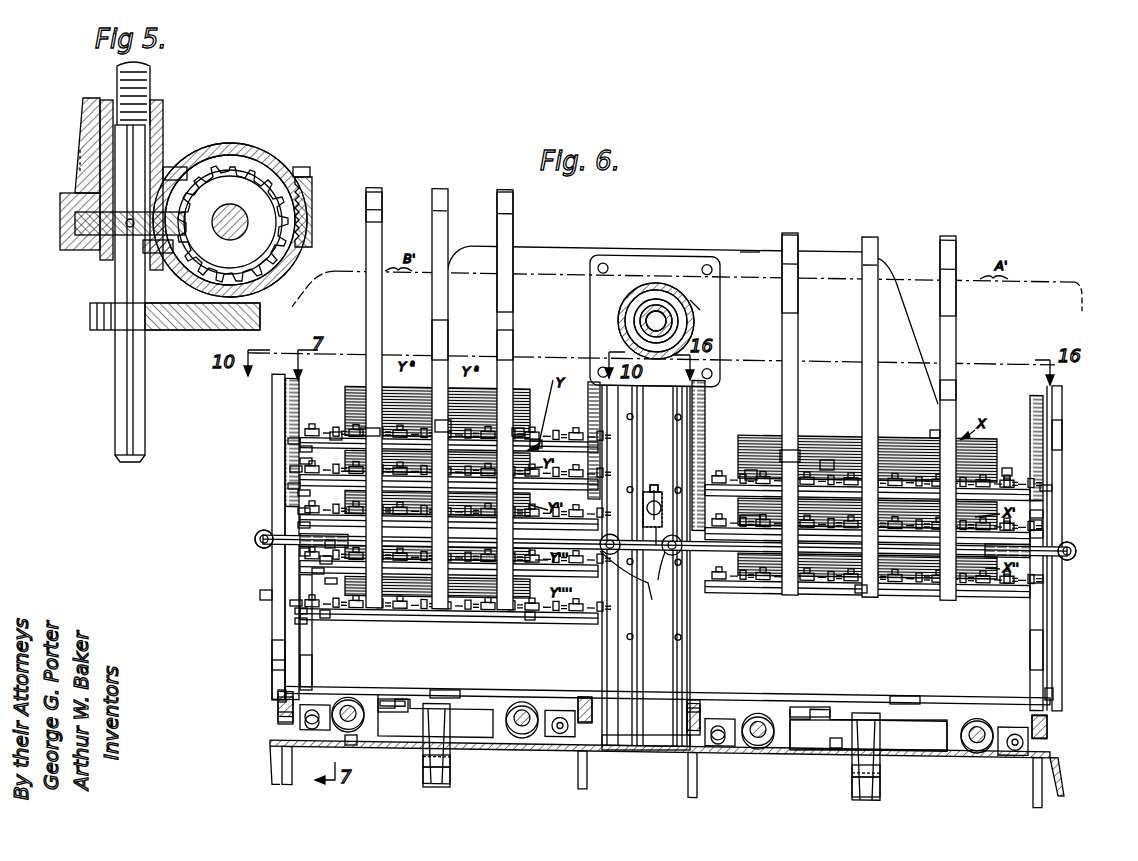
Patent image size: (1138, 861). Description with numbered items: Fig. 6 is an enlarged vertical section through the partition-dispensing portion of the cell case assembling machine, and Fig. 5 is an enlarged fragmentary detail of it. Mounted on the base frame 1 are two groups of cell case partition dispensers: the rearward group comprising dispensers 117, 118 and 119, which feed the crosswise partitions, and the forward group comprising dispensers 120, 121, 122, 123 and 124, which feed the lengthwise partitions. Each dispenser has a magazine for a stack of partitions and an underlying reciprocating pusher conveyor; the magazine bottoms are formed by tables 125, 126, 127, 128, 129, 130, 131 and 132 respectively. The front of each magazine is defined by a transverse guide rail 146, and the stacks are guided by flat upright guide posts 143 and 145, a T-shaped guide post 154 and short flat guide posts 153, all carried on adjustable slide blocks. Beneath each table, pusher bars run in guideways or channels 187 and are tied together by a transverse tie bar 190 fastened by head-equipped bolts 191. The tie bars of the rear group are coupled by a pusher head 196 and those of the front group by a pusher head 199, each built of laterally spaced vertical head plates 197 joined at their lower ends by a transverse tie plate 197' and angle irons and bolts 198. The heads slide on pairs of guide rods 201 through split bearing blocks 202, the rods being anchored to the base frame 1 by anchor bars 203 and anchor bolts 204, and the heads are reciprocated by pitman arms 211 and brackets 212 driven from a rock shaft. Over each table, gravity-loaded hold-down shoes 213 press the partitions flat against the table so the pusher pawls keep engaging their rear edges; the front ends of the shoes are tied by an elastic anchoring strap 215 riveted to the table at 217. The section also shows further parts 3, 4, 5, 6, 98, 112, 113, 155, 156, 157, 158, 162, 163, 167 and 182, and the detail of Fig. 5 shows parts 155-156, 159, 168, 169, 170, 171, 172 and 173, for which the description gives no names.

In FIG. 5, the base frame 1 is at (92, 318).
In FIG. 6, the base frame 1 is at (645, 748).
In FIG. 6, the band 3 is at (742, 256).
In FIG. 6, the bearing plate 4 is at (685, 305).
In FIG. 6, the shaft 5 is at (657, 548).
In FIG. 6, the bearing 6 is at (680, 315).
In FIG. 6, the shaft end 98 is at (650, 322).
In FIG. 6, the screw 112 is at (657, 461).
In FIG. 6, the bracket 113 is at (653, 490).
In FIG. 6, the cell case partition dispenser 117 is at (960, 390).
In FIG. 6, the cell case partition dispenser 118 is at (752, 518).
In FIG. 6, the cell case partition dispenser 119 is at (860, 592).
In FIG. 6, the cell case partition dispenser 120 is at (516, 348).
In FIG. 6, the cell case partition dispenser 121 is at (292, 470).
In FIG. 6, the cell case partition dispenser 122 is at (300, 512).
In FIG. 6, the cell case partition dispenser 123 is at (330, 580).
In FIG. 6, the cell case partition dispenser 124 is at (300, 612).
In FIG. 6, the table 125 is at (1045, 514).
In FIG. 6, the table 126 is at (1045, 537).
In FIG. 6, the table 127 is at (1045, 580).
In FIG. 6, the table 128 is at (300, 448).
In FIG. 6, the table 129 is at (300, 492).
In FIG. 6, the table 130 is at (300, 525).
In FIG. 6, the table 131 is at (318, 570).
In FIG. 6, the table 132 is at (300, 624).
In FIG. 6, the flat upright partition guide post 143 is at (380, 220).
In FIG. 6, the flat upright guide post 145 is at (798, 304).
In FIG. 6, the transverse guide rail 146 is at (540, 440).
In FIG. 6, the short flat guide post 153 is at (792, 450).
In FIG. 6, the T-shaped upright guide post 154 is at (433, 352).
In FIG. 6, the post 155 is at (698, 705).
In FIG. 5, the bearing housing 155-156 is at (161, 125).
In FIG. 6, the post 156 is at (276, 720).
In FIG. 6, the frame plate 157 is at (305, 668).
In FIG. 6, the cable 158 is at (330, 545).
In FIG. 5, the knob 159 is at (150, 77).
In FIG. 6, the shaft end 162 is at (255, 538).
In FIG. 6, the collar 163 is at (300, 553).
In FIG. 6, the lever 167 is at (328, 560).
In FIG. 5, the key bar 168 is at (92, 226).
In FIG. 5, the gear 169 is at (232, 190).
In FIG. 5, the shaft 170 is at (128, 385).
In FIG. 5, the pin 171 is at (130, 220).
In FIG. 5, the gear housing 172 is at (252, 163).
In FIG. 6, the gear housing 172 is at (282, 726).
In FIG. 5, the bracket 173 is at (82, 150).
In FIG. 6, the bearing 182 is at (312, 715).
In FIG. 6, the table guideway 187 is at (350, 435).
In FIG. 6, the transverse tie bar 190 is at (302, 462).
In FIG. 6, the head-equipped bolt 191 is at (830, 625).
In FIG. 6, the pusher head 196 is at (1062, 442).
In FIG. 6, the vertical head plate 197 is at (644, 577).
In FIG. 6, the transverse tie plate 197' is at (697, 679).
In FIG. 6, the angle irons and bolts 198 is at (283, 697).
In FIG. 6, the pusher head 199 is at (265, 662).
In FIG. 6, the guide rod 201 is at (356, 712).
In FIG. 6, the split bearing block 202 is at (372, 695).
In FIG. 6, the anchor bar 203 is at (960, 790).
In FIG. 6, the anchor bolt 204 is at (355, 745).
In FIG. 6, the pitman arm 211 is at (450, 780).
In FIG. 6, the bracket 212 is at (450, 762).
In FIG. 6, the hold-down shoe 213 is at (382, 435).
In FIG. 6, the anchoring strap 215 is at (443, 425).
In FIG. 6, the rivet 217 is at (292, 440).